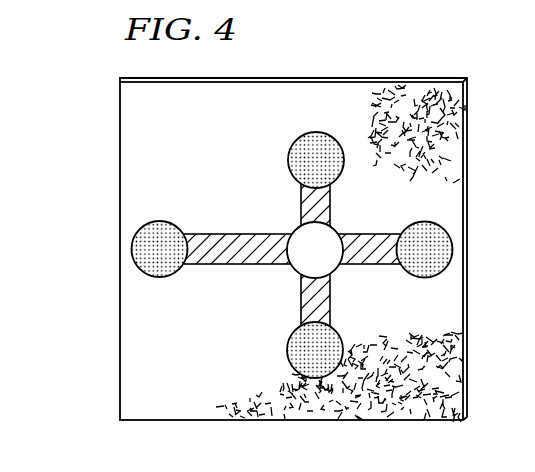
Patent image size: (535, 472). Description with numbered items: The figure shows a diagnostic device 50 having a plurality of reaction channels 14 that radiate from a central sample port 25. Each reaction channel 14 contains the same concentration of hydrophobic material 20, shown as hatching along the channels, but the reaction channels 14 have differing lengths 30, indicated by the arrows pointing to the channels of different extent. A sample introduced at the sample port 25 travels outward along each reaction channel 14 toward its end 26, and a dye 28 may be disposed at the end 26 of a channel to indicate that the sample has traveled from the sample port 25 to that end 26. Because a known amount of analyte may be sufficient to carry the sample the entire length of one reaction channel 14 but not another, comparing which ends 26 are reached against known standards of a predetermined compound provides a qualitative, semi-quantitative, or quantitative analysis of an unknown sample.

The device 50 is at (105, 163).
The reaction channel 14 is at (287, 255).
The hydrophobic material 20 is at (377, 256).
The sample port 25 is at (328, 261).
The dye 28 is at (313, 163).
The end 26 is at (447, 233).
The differing lengths 30 is at (341, 193).